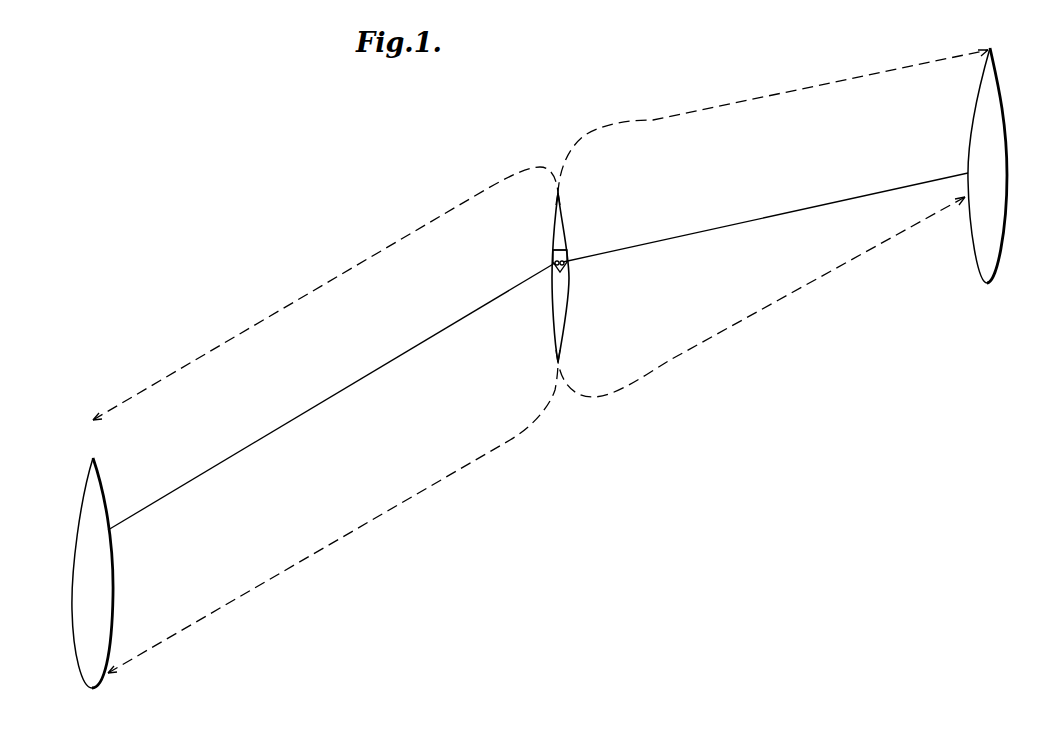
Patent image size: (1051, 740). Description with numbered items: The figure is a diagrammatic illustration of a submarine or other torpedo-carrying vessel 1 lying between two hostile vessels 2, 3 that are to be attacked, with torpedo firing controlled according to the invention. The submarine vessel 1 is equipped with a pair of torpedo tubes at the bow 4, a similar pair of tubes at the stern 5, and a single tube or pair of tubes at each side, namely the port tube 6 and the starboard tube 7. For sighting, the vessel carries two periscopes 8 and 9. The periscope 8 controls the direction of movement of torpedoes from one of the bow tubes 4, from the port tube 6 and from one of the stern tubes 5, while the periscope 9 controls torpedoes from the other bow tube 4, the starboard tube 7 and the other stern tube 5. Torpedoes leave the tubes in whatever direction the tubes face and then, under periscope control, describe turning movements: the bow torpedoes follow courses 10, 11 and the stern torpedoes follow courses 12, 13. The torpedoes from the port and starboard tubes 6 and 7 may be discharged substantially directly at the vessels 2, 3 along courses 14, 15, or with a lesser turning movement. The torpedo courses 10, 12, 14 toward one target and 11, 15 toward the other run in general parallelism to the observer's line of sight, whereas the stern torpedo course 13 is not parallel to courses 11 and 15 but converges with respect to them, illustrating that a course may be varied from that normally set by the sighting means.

The submarine vessel 1 is at (566, 215).
The hostile vessel 2 is at (113, 580).
The hostile vessel 3 is at (1006, 207).
The bow torpedo tubes 4 is at (560, 197).
The stern torpedo tubes 5 is at (565, 360).
The port torpedo tube 6 is at (551, 262).
The starboard torpedo tube 7 is at (568, 262).
The periscope 8 is at (553, 256).
The periscope 9 is at (566, 254).
The bow torpedo course 10 is at (325, 293).
The bow torpedo course 11 is at (773, 121).
The stern torpedo course 12 is at (333, 517).
The stern torpedo course 13 is at (761, 297).
The port torpedo course 14 is at (331, 396).
The starboard torpedo course 15 is at (765, 217).